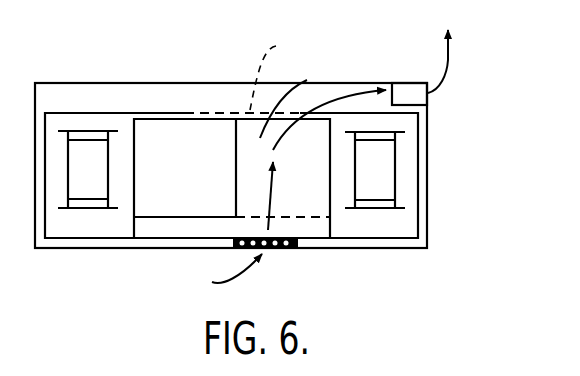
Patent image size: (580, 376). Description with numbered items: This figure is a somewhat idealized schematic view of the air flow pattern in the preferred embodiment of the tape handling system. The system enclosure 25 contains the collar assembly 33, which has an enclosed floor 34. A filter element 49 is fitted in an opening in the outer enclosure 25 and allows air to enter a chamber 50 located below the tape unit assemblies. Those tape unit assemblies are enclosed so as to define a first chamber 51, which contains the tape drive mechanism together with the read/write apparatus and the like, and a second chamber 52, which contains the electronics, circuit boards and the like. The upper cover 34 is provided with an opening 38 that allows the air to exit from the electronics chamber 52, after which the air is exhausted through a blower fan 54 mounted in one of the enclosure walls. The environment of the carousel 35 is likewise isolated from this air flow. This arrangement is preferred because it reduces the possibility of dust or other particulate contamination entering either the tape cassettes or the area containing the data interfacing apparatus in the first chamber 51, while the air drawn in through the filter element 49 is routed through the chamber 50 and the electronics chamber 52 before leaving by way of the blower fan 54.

The system enclosure 25 is at (70, 85).
The collar assembly 33 is at (43, 207).
The enclosed floor / upper cover 34 is at (120, 112).
The carousel 35 is at (400, 173).
The opening 38 is at (279, 74).
The filter element 49 is at (287, 250).
The chamber 50 is at (190, 228).
The first chamber 51 is at (200, 147).
The chamber 52 is at (307, 80).
The blower fan 54 is at (415, 84).